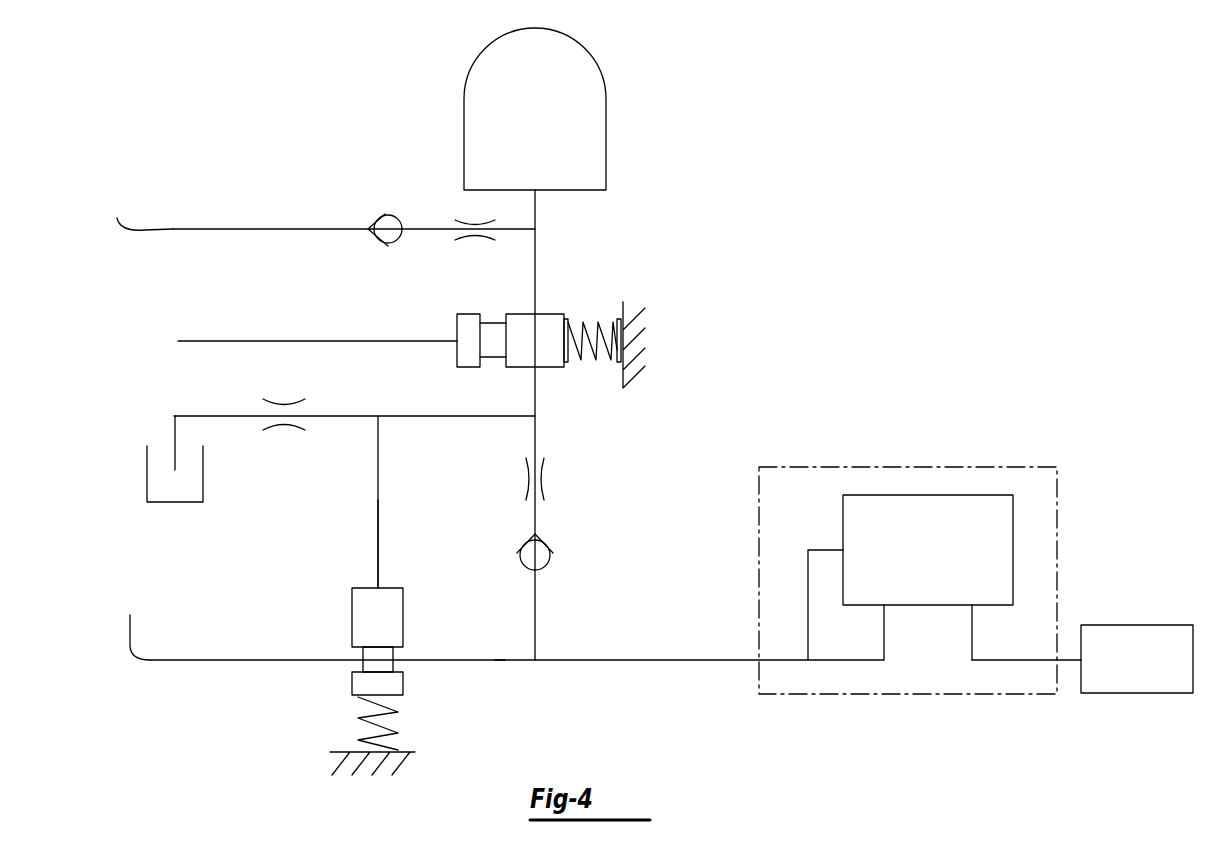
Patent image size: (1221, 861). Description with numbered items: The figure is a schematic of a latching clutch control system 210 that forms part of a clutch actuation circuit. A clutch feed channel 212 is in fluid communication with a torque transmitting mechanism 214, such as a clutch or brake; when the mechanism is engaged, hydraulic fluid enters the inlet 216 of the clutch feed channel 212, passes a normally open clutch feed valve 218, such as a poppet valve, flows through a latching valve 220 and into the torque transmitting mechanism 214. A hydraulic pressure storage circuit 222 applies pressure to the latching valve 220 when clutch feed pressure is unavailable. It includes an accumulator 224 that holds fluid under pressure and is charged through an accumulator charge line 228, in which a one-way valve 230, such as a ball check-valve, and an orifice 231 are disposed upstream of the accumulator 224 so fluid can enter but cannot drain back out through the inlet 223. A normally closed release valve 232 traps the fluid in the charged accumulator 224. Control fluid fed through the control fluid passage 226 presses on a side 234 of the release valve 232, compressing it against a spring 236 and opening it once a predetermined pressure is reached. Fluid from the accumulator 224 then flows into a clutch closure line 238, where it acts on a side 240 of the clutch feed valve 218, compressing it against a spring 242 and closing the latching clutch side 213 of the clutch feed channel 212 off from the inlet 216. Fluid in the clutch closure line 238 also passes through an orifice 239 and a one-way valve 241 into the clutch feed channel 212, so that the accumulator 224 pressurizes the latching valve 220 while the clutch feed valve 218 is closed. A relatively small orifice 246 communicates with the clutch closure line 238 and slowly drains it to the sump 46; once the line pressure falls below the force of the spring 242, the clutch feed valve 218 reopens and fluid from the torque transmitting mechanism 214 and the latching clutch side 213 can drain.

The sump 46 is at (147, 475).
The latching clutch control system 210 is at (836, 178).
The clutch feed channel 212 is at (215, 672).
The latching clutch side 213 is at (500, 661).
The torque transmitting mechanism 214 is at (1153, 679).
The inlet 216 is at (133, 623).
The clutch feed valve 218 is at (415, 614).
The latching valve 220 is at (950, 495).
The hydraulic pressure storage circuit 222 is at (618, 231).
The inlet 223 is at (139, 210).
The accumulator 224 is at (604, 70).
The control fluid passage 226 is at (216, 341).
The accumulator charge line 228 is at (226, 229).
The one-way valve 230 is at (387, 206).
The orifice 231 is at (468, 254).
The release valve 232 is at (550, 314).
The side 234 is at (457, 359).
The spring 236 is at (600, 356).
The clutch closure line 238 is at (440, 416).
The orifice 239 is at (562, 478).
The side 240 is at (365, 588).
The one-way valve 241 is at (580, 556).
The spring 242 is at (397, 742).
The orifice 246 is at (284, 398).